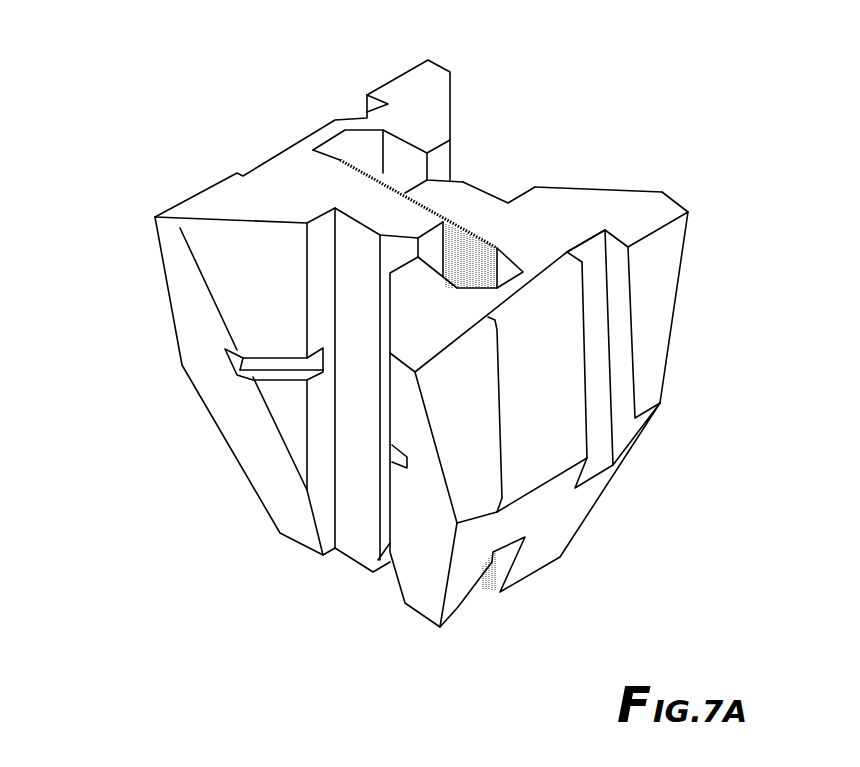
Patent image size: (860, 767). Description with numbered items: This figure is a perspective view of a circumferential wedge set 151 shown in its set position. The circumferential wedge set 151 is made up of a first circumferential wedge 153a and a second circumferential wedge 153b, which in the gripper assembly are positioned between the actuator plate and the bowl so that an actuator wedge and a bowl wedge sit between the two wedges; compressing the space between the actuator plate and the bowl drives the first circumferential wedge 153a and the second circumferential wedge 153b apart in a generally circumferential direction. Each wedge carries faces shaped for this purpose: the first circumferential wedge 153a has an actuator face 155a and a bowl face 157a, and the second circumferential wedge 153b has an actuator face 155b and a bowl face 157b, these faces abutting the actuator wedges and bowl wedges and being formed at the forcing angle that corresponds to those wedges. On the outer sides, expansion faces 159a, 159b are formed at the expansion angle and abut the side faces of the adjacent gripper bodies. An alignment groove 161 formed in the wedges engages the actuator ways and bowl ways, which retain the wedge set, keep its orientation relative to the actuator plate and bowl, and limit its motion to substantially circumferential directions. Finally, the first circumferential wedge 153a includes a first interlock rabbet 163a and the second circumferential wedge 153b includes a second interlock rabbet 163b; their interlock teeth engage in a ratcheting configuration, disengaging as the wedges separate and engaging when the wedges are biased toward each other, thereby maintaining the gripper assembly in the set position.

The circumferential wedge set 151 is at (128, 206).
The first circumferential wedge 153a is at (438, 65).
The second circumferential wedge 153b is at (667, 238).
The actuator face 155a is at (235, 268).
The actuator face 155b is at (390, 380).
The bowl face 157a is at (450, 122).
The bowl face 157b is at (625, 190).
The expansion face 159a is at (307, 133).
The expansion face 159b is at (657, 298).
The alignment groove 161 is at (252, 367).
The first interlock rabbet 163a is at (378, 213).
The second interlock rabbet 163b is at (458, 197).